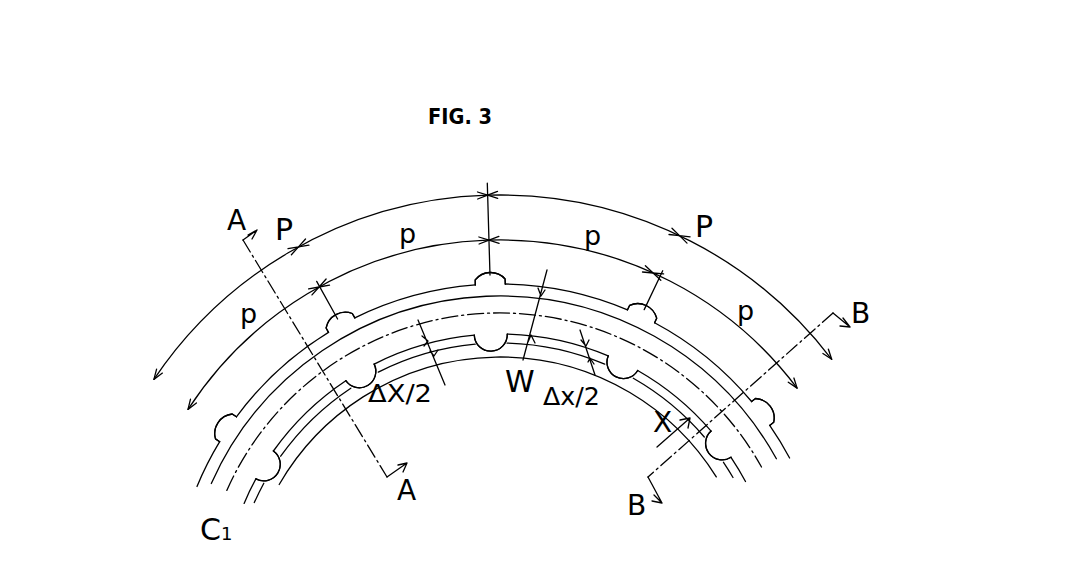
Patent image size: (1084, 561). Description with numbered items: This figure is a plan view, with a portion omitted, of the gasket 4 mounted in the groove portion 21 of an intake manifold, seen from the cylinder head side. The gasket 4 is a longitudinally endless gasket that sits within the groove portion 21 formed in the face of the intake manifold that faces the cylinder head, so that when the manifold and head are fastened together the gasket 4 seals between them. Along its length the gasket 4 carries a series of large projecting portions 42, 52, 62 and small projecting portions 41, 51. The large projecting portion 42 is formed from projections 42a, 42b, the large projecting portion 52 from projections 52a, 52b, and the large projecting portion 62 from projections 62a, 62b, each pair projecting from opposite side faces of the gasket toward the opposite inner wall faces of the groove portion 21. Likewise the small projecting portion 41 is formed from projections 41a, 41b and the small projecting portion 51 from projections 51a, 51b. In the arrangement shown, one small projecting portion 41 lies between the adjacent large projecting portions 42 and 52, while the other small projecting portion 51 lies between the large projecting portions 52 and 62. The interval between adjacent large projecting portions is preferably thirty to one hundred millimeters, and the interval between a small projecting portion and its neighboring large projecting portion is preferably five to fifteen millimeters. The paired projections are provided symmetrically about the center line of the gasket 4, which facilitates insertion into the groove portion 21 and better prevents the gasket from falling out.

The gasket 4 is at (570, 318).
The groove portion 21 is at (402, 302).
The small projecting portion 41 is at (778, 206).
The projection 41a is at (628, 352).
The projection 41b is at (648, 318).
The large projecting portion 42 is at (870, 400).
The projection 42a is at (733, 448).
The projection 42b is at (775, 417).
The small projecting portion 51 is at (180, 218).
The projection 51a is at (355, 366).
The projection 51b is at (338, 326).
The large projecting portion 52 is at (634, 180).
The projection 52a is at (497, 332).
The projection 52b is at (493, 281).
The large projecting portion 62 is at (102, 428).
The projection 62a is at (260, 463).
The projection 62b is at (220, 433).